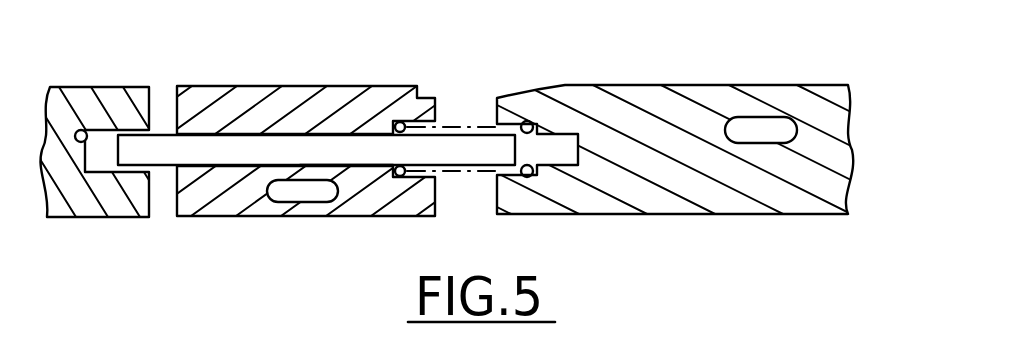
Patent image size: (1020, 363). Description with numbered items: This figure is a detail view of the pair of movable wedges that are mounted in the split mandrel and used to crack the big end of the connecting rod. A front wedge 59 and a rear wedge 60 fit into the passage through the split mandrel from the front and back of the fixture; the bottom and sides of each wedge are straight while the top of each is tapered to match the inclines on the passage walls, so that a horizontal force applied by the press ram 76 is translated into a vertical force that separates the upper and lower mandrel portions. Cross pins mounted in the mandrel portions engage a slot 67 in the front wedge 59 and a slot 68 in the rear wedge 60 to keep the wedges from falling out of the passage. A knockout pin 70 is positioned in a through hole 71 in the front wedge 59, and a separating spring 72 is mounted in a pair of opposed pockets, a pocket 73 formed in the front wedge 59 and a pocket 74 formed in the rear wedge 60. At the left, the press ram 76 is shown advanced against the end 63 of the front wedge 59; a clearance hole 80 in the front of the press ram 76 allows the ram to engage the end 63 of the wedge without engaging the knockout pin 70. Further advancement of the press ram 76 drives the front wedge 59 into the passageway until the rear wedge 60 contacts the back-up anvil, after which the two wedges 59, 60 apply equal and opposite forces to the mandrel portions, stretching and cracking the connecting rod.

The front wedge 59 is at (248, 88).
The rear wedge 60 is at (680, 87).
The end of the front wedge 63 is at (177, 88).
The slot in the front wedge 67 is at (282, 197).
The slot in the rear wedge 68 is at (777, 120).
The knockout pin 70 is at (277, 145).
The through hole 71 is at (367, 158).
The separating spring 72 is at (448, 130).
The pocket in the front wedge 73 is at (420, 97).
The pocket in the rear wedge 74 is at (519, 119).
The press ram 76 is at (80, 87).
The clearance hole 80 is at (86, 128).